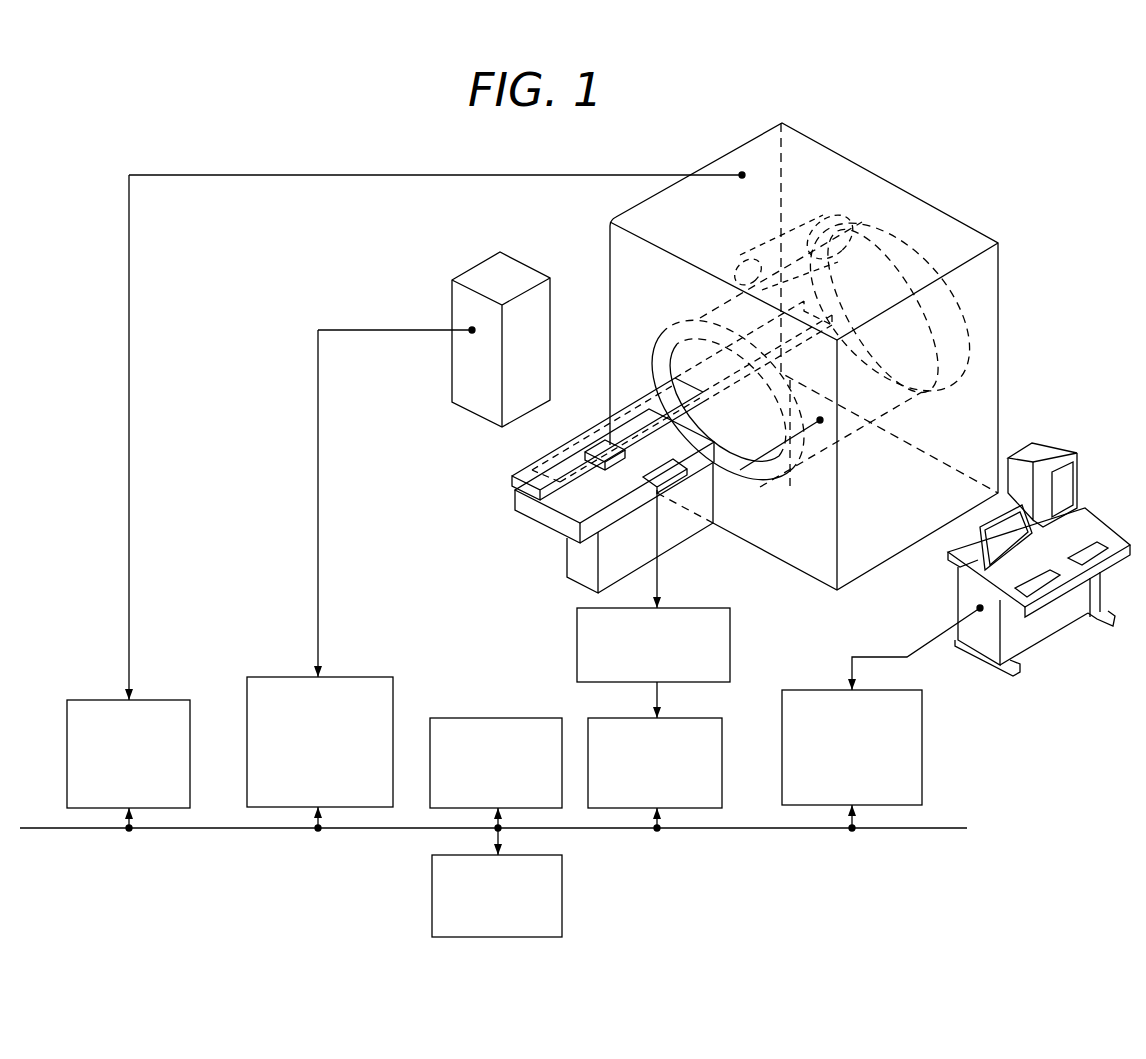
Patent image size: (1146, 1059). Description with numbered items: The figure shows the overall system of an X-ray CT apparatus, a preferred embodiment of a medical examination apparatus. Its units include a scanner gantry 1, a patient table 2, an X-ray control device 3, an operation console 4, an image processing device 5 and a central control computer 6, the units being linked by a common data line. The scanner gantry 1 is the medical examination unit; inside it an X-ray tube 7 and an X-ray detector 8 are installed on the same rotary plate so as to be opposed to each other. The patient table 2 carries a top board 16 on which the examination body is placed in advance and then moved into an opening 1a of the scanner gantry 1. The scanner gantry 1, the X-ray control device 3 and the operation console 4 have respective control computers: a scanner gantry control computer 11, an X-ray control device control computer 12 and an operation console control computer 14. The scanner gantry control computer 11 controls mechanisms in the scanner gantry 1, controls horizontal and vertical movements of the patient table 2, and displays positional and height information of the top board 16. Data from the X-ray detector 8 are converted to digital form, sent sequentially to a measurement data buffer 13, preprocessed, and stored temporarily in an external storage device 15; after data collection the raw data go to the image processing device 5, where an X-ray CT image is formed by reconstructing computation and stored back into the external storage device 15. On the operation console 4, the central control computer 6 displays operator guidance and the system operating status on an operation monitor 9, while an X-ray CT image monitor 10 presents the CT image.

The scanner gantry 1 is at (915, 225).
The opening 1a is at (710, 373).
The patient table 2 is at (578, 562).
The X-ray control device 3 is at (510, 283).
The operation console 4 is at (1107, 553).
The image processing device 5 is at (603, 718).
The central control computer 6 is at (432, 890).
The X-ray tube 7 is at (793, 240).
The X-ray detector 8 is at (812, 470).
The operation monitor 9 is at (967, 557).
The X-ray CT image monitor 10 is at (1078, 477).
The scanner gantry control computer 11 is at (82, 700).
The X-ray control device control computer 12 is at (260, 677).
The measurement data buffer 13 is at (575, 618).
The operation console control computer 14 is at (800, 690).
The external storage device 15 is at (467, 718).
The top board 16 is at (583, 487).